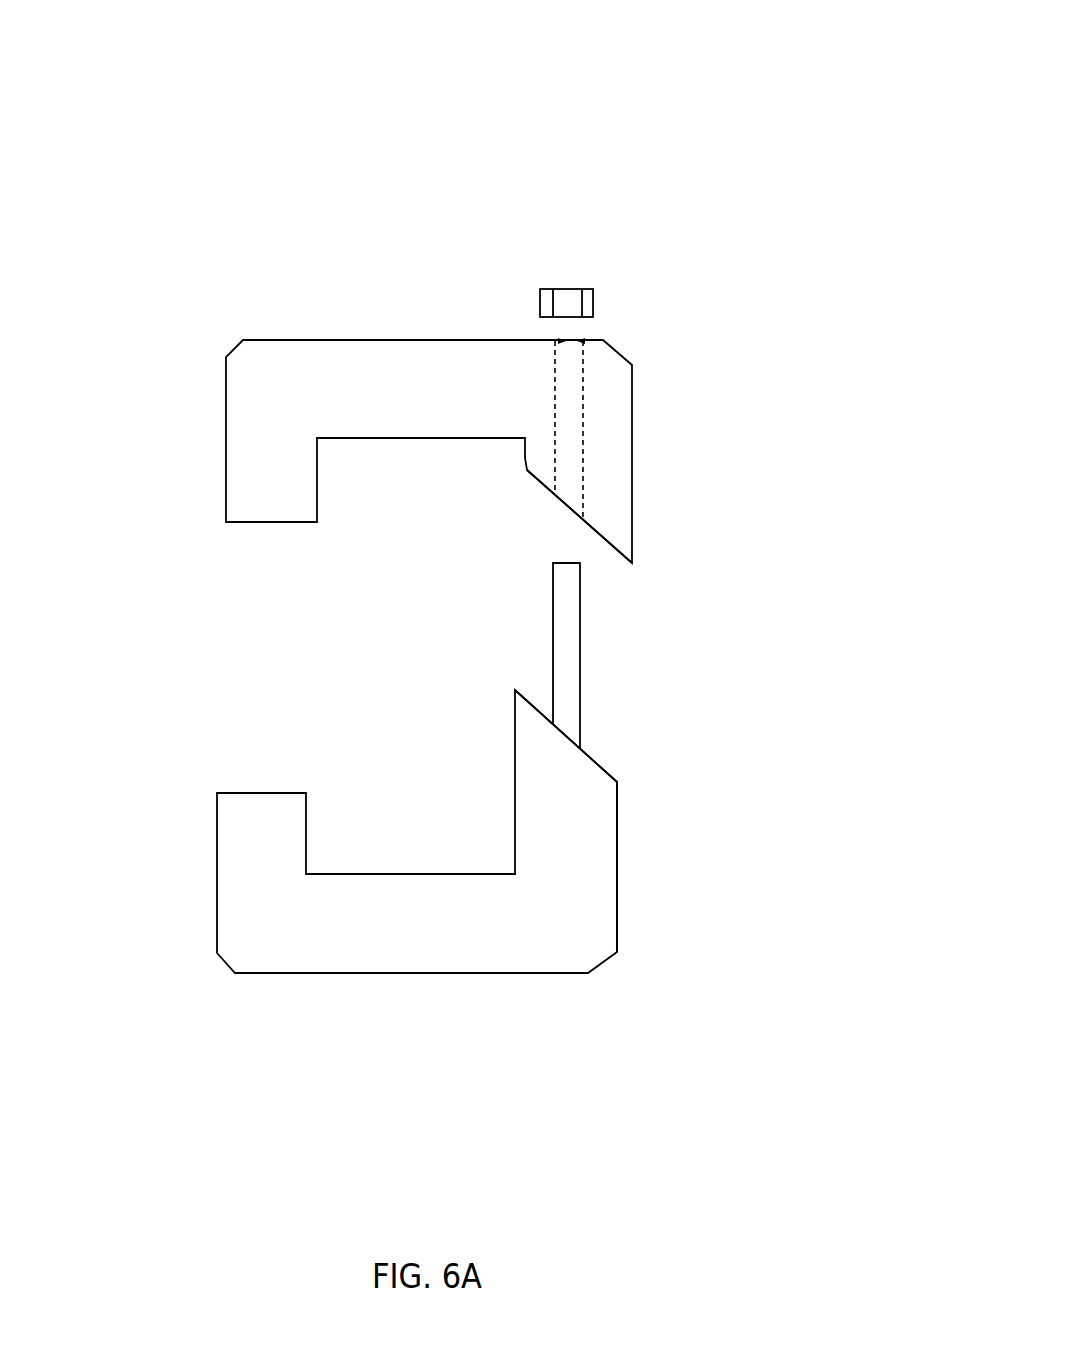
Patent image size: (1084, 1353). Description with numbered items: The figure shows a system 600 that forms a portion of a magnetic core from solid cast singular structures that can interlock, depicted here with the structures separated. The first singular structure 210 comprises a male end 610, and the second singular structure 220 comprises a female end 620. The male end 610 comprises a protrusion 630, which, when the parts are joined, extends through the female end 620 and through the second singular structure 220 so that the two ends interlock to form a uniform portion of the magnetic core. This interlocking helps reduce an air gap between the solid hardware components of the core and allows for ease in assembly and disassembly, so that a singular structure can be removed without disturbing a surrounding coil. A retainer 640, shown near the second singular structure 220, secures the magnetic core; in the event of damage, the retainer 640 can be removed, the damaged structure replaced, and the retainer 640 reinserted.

The system 600 is at (545, 66).
The second singular structure 220 is at (382, 387).
The first singular structure 210 is at (359, 912).
The female end 620 is at (597, 467).
The male end 610 is at (565, 779).
The protrusion 630 is at (569, 675).
The retainer 640 is at (587, 303).